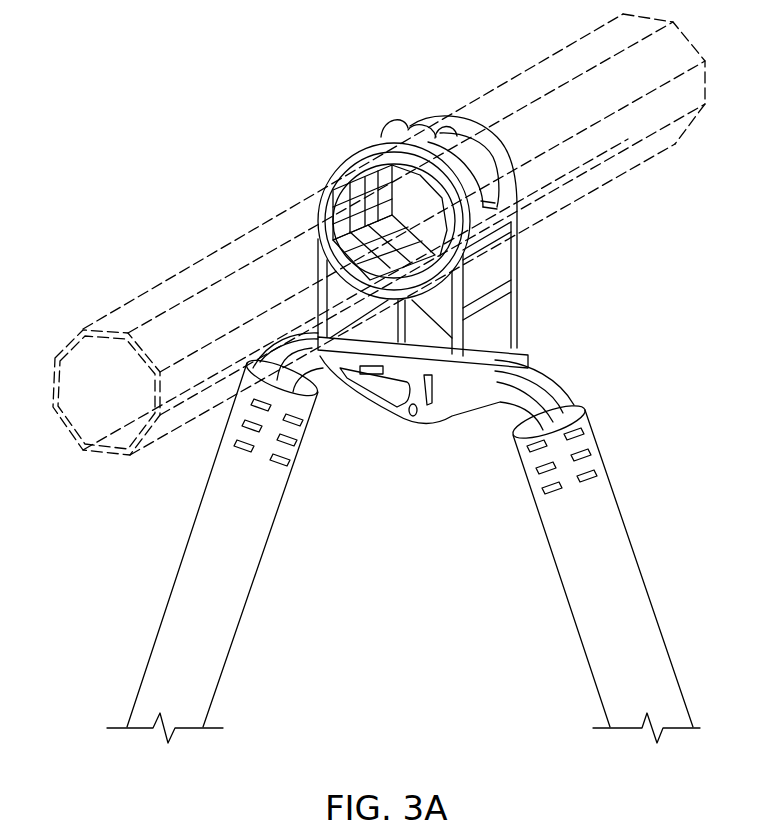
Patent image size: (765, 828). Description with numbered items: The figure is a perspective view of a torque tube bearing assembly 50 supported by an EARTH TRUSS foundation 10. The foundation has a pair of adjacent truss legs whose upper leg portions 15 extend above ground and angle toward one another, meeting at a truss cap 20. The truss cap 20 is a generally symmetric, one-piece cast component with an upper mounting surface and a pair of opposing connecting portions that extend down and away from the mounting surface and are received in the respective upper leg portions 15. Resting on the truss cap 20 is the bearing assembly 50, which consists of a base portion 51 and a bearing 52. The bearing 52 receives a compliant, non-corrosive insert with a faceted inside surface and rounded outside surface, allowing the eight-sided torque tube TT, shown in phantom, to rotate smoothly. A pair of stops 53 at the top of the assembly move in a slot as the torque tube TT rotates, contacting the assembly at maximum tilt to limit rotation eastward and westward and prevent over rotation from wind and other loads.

The EARTH TRUSS foundation 10 is at (106, 93).
The torque tube TT is at (572, 47).
The torque tube bearing assembly 50 is at (350, 130).
The bearing 52 is at (342, 166).
The stops 53 is at (432, 132).
The base portion 51 is at (503, 262).
The truss cap 20 is at (555, 360).
The upper leg portions 15 is at (233, 592).